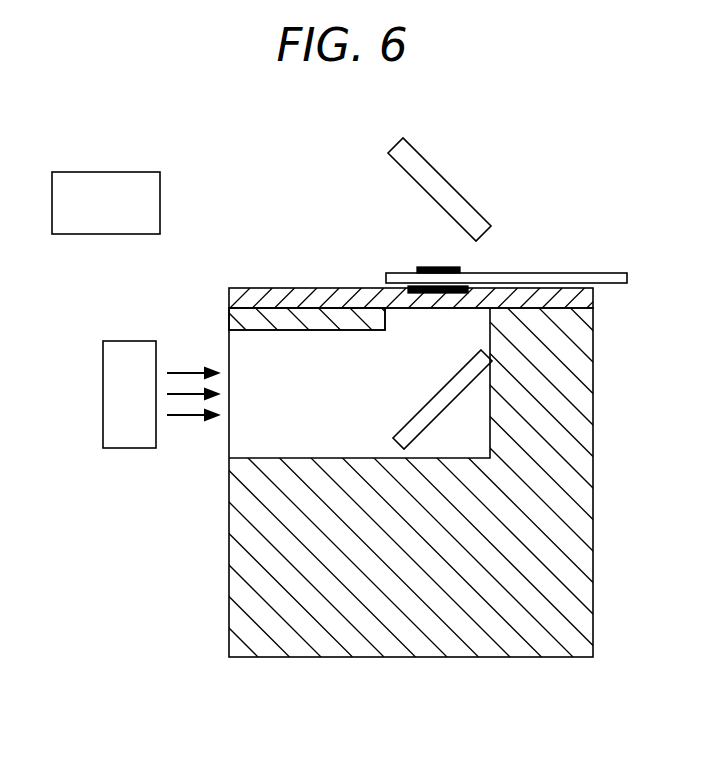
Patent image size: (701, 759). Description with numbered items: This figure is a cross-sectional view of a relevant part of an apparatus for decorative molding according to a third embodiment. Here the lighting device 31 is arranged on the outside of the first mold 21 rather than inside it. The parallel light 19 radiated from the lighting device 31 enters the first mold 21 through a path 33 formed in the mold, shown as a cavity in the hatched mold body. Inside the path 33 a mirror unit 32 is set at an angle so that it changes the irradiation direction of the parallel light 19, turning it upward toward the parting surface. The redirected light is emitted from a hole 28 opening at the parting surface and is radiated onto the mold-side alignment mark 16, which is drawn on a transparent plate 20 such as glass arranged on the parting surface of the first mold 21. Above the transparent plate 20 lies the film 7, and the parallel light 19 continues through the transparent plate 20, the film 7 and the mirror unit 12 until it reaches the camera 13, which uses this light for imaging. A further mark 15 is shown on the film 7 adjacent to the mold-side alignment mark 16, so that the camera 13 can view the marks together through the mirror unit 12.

The film 7 is at (581, 266).
The mirror unit 12 is at (457, 203).
The camera 13 is at (77, 177).
The alignment mark 15 is at (430, 267).
The mold-side alignment mark 16 is at (408, 290).
The parallel light 19 is at (195, 418).
The transparent plate 20 is at (338, 295).
The first mold 21 is at (520, 638).
The hole 28 is at (389, 323).
The lighting device 31 is at (116, 409).
The mirror unit 32 is at (442, 397).
The path 33 is at (327, 406).